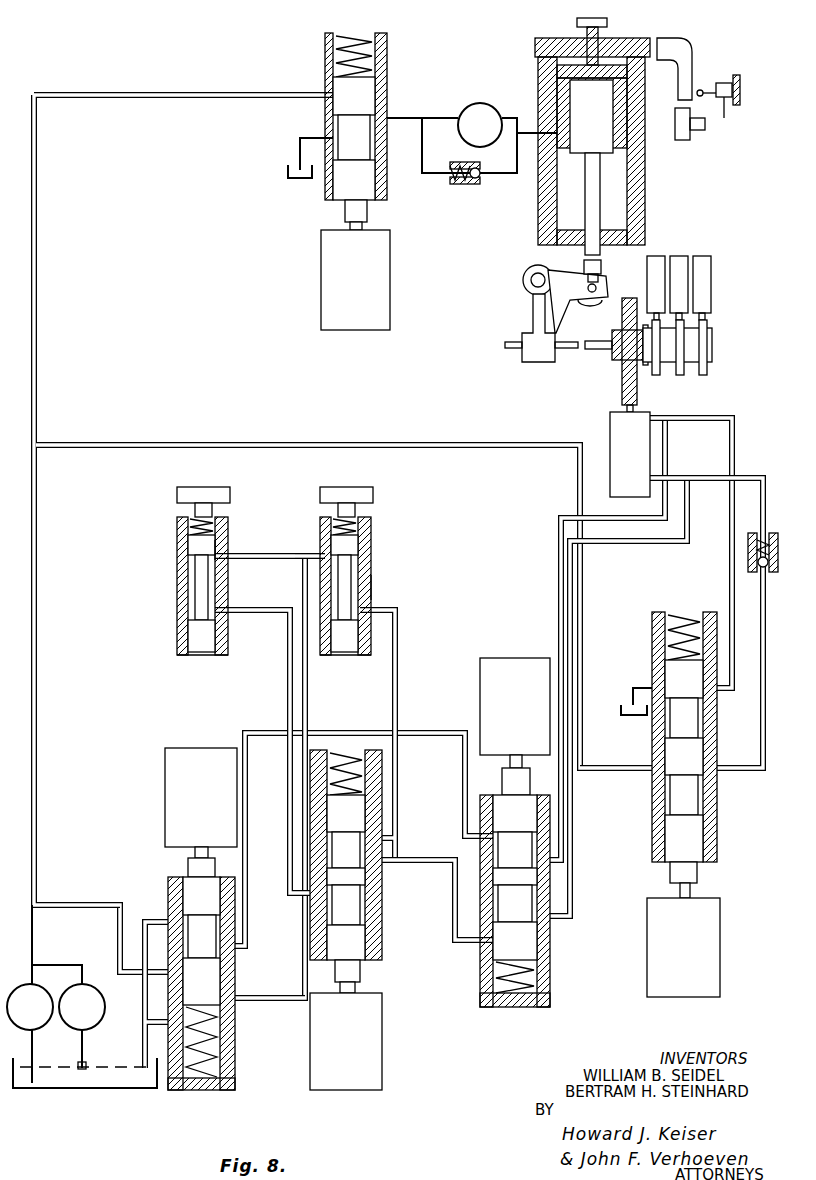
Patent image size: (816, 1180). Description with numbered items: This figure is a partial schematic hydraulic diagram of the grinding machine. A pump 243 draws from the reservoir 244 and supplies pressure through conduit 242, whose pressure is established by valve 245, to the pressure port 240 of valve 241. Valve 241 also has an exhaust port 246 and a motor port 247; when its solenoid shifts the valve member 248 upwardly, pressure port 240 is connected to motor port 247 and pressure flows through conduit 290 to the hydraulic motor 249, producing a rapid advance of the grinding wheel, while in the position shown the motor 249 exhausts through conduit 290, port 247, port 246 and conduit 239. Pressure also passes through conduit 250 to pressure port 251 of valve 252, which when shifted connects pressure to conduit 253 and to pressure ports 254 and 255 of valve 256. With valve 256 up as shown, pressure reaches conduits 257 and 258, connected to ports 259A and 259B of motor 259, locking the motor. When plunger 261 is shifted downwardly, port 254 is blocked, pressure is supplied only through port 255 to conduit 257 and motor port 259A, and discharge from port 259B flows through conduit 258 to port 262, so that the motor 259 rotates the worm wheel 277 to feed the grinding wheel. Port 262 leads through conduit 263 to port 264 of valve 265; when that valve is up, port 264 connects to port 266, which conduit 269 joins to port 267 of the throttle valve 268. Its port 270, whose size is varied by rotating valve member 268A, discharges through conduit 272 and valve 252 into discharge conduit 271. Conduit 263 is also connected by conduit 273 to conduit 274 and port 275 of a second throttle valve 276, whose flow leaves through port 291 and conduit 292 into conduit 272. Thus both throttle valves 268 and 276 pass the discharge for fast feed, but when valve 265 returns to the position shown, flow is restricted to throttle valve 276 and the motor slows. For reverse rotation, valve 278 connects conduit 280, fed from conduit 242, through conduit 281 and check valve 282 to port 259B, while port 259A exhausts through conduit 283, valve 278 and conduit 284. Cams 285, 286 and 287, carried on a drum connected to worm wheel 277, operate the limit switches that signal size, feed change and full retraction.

The conduit 239 is at (300, 155).
The pressure port 240 is at (333, 95).
The valve 241 is at (387, 62).
The conduit 242 is at (36, 397).
The pump 243 is at (50, 990).
The reservoir 244 is at (290, 178).
The valve 245 is at (100, 1018).
The exhaust port 246 is at (333, 140).
The motor port 247 is at (387, 118).
The valve member 248 is at (345, 205).
The hydraulic motor 249 is at (648, 190).
The conduit 250 is at (97, 905).
The pressure port 251 is at (168, 973).
The valve 252 is at (168, 884).
The conduit 253 is at (243, 732).
The pressure port 254 is at (487, 835).
The pressure port 255 is at (495, 905).
The valve 256 is at (548, 1002).
The conduit 257 is at (560, 554).
The conduit 258 is at (568, 604).
The motor 259 is at (646, 496).
The port 259A is at (652, 420).
The port 259B is at (652, 478).
The plunger 261 is at (548, 945).
The port 262 is at (555, 915).
The conduit 263 is at (455, 892).
The port 264 is at (367, 863).
The valve 265 is at (375, 953).
The port 266 is at (322, 897).
The port 267 is at (222, 612).
The throttle valve 268 is at (180, 588).
The valve member 268A is at (192, 548).
The conduit 269 is at (288, 662).
The port 270 is at (222, 545).
The discharge conduit 271 is at (145, 1045).
The conduit 272 is at (262, 556).
The conduit 273 is at (398, 856).
The conduit 274 is at (397, 628).
The port 275 is at (380, 592).
The throttle valve 276 is at (373, 536).
The worm wheel 277 is at (622, 380).
The valve 278 is at (717, 850).
The conduit 280 is at (607, 770).
The conduit 281 is at (745, 786).
The check valve 282 is at (750, 552).
The conduit 283 is at (723, 700).
The conduit 284 is at (633, 690).
The cam 285 is at (656, 375).
The cam 286 is at (680, 375).
The cam 287 is at (706, 375).
The conduit 290 is at (438, 118).
The port 291 is at (327, 550).
The conduit 292 is at (305, 552).